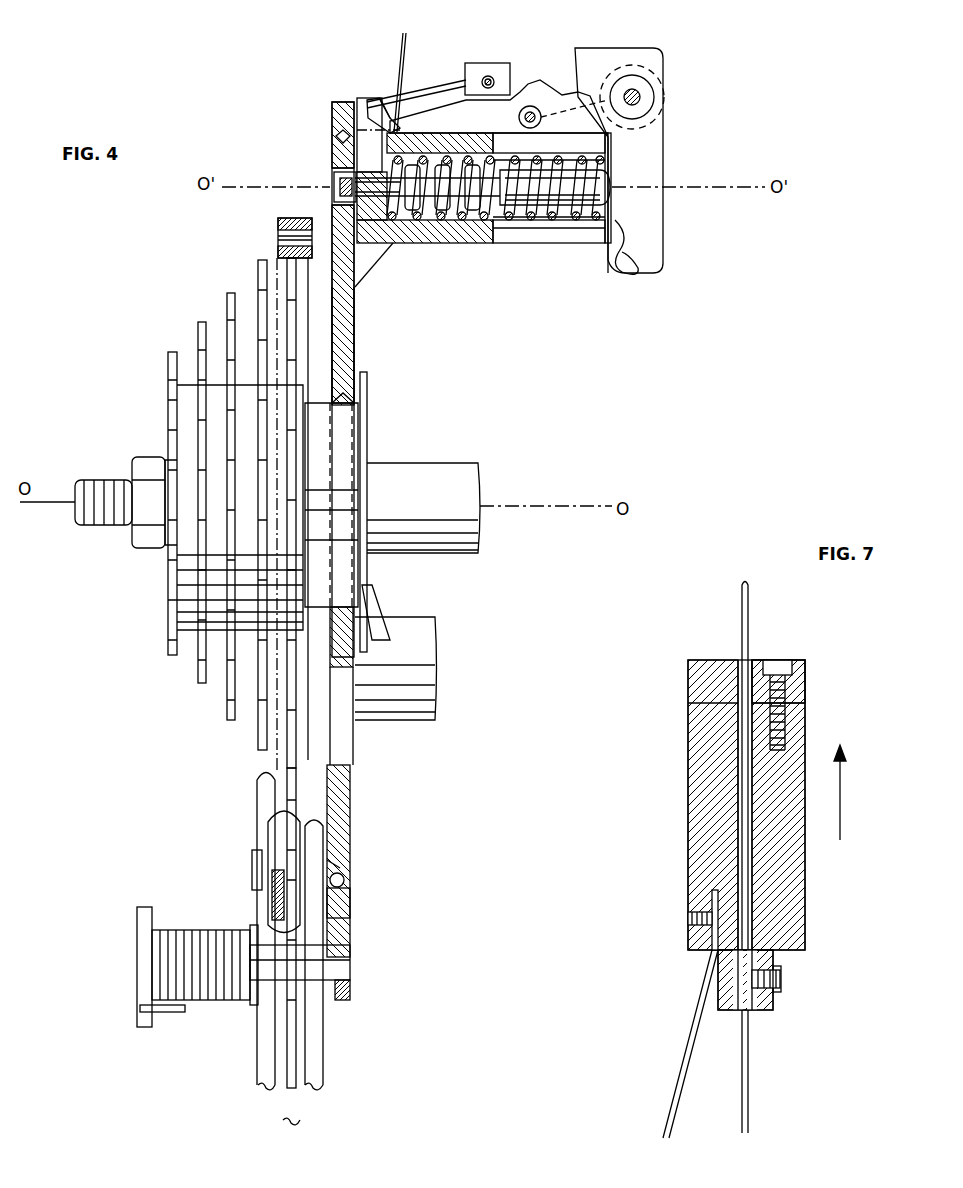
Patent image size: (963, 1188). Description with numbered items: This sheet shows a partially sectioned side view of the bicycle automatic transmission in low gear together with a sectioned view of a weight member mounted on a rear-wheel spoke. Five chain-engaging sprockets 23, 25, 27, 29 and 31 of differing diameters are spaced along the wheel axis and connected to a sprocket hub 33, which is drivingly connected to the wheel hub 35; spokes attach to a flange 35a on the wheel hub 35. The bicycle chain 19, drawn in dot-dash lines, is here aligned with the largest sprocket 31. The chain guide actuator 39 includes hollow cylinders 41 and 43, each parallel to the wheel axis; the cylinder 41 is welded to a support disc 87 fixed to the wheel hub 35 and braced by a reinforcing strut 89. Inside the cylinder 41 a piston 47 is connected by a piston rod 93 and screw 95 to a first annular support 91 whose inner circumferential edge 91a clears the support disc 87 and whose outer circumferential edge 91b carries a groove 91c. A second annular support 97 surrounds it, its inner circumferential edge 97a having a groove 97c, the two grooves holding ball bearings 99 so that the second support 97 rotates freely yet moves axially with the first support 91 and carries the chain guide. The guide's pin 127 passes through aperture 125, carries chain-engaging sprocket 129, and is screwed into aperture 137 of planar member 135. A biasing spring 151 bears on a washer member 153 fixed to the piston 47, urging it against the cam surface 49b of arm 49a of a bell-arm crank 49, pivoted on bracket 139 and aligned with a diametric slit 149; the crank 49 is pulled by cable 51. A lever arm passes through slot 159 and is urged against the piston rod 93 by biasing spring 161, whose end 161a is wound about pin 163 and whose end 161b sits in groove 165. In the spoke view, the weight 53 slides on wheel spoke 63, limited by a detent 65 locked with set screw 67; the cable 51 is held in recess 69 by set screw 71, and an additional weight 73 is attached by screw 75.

In FIG. 4, the bicycle chain 19 is at (278, 234).
In FIG. 4, the chain-engaging sprocket 23 is at (168, 653).
In FIG. 4, the chain-engaging sprocket 25 is at (198, 686).
In FIG. 4, the chain-engaging sprocket 27 is at (227, 721).
In FIG. 4, the chain-engaging sprocket 29 is at (258, 748).
In FIG. 4, the chain-engaging sprocket 31 is at (300, 762).
In FIG. 4, the sprocket hub 33 is at (180, 385).
In FIG. 4, the wheel hub 35 is at (345, 570).
In FIG. 4, the flange 35a is at (376, 415).
In FIG. 4, the chain guide actuator 39 is at (266, 129).
In FIG. 4, the hollow cylinder 41 is at (428, 243).
In FIG. 4, the hollow cylinder 43 is at (410, 620).
In FIG. 4, the piston 47 is at (552, 240).
In FIG. 4, the bell-arm crank 49 is at (648, 48).
In FIG. 4, the arm 49a is at (655, 234).
In FIG. 4, the cam surface 49b is at (645, 268).
In FIG. 4, the cable 51 is at (405, 60).
In FIG. 7, the cable 51 is at (676, 1073).
In FIG. 7, the radially displaceable weight 53 is at (698, 738).
In FIG. 7, the wheel spoke 63 is at (738, 613).
In FIG. 7, the detent 65 is at (760, 1010).
In FIG. 7, the set screw 67 is at (783, 980).
In FIG. 7, the recess 69 is at (712, 896).
In FIG. 7, the set screw 71 is at (690, 918).
In FIG. 7, the additional weight 73 is at (800, 688).
In FIG. 7, the screw 75 is at (778, 668).
In FIG. 4, the support disc 87 is at (356, 341).
In FIG. 4, the reinforcing strut 89 is at (372, 266).
In FIG. 4, the first annular support 91 is at (332, 152).
In FIG. 4, the inner circumferential edge 91a is at (322, 820).
In FIG. 4, the outer circumferential edge 91b is at (348, 878).
In FIG. 4, the groove 91c is at (345, 862).
In FIG. 4, the piston rod 93 is at (478, 240).
In FIG. 4, the screw 95 is at (334, 190).
In FIG. 4, the second annular support 97 is at (334, 104).
In FIG. 4, the inner circumferential edge 97a is at (350, 895).
In FIG. 4, the groove 97c is at (350, 908).
In FIG. 4, the ball bearings 99 is at (332, 118).
In FIG. 4, the aperture 125 is at (268, 838).
In FIG. 4, the pin 127 is at (252, 865).
In FIG. 4, the chain-engaging sprocket 129 is at (272, 888).
In FIG. 4, the planar member 135 is at (325, 1050).
In FIG. 4, the aperture 137 is at (350, 810).
In FIG. 4, the bracket 139 is at (612, 65).
In FIG. 4, the diametric slit 149 is at (572, 240).
In FIG. 4, the biasing spring 151 is at (518, 240).
In FIG. 4, the washer member 153 is at (602, 242).
In FIG. 4, the slot 159 is at (370, 97).
In FIG. 4, the biasing spring 161 is at (456, 80).
In FIG. 4, the spring end 161a is at (492, 62).
In FIG. 4, the spring end 161b is at (398, 98).
In FIG. 4, the pin 163 is at (533, 87).
In FIG. 4, the groove 165 is at (380, 98).